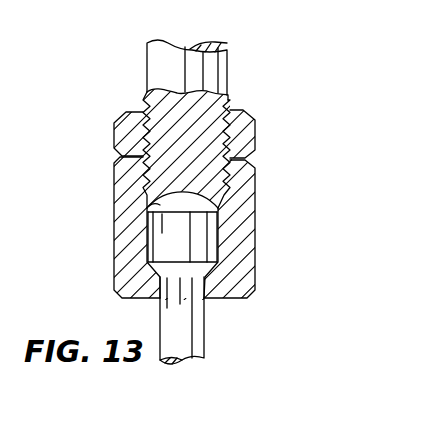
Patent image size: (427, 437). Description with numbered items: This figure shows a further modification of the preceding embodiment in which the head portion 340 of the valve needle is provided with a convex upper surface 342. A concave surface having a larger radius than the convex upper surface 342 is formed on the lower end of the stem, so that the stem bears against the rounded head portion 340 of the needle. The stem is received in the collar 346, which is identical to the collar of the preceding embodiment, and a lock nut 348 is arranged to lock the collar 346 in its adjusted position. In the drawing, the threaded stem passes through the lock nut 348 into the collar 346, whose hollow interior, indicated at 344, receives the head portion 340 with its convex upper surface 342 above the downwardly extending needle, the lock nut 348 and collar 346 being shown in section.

The lock nut 348 is at (118, 135).
The socket 344 is at (157, 204).
The collar 346 is at (124, 268).
The convex upper surface 342 is at (221, 206).
The head portion 340 is at (202, 252).